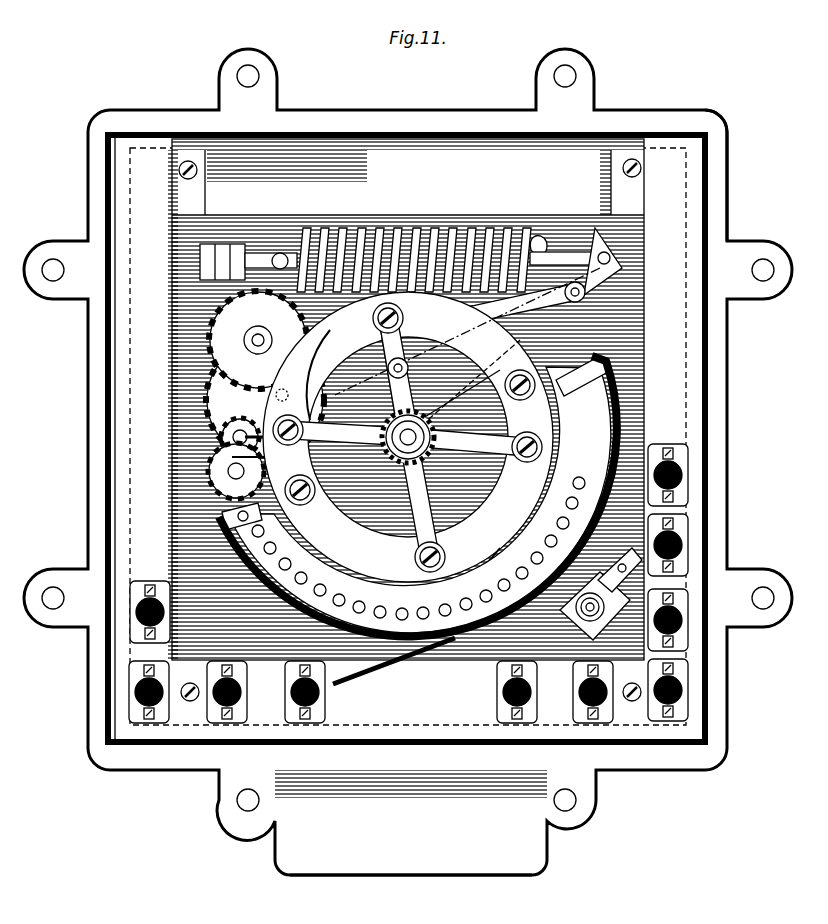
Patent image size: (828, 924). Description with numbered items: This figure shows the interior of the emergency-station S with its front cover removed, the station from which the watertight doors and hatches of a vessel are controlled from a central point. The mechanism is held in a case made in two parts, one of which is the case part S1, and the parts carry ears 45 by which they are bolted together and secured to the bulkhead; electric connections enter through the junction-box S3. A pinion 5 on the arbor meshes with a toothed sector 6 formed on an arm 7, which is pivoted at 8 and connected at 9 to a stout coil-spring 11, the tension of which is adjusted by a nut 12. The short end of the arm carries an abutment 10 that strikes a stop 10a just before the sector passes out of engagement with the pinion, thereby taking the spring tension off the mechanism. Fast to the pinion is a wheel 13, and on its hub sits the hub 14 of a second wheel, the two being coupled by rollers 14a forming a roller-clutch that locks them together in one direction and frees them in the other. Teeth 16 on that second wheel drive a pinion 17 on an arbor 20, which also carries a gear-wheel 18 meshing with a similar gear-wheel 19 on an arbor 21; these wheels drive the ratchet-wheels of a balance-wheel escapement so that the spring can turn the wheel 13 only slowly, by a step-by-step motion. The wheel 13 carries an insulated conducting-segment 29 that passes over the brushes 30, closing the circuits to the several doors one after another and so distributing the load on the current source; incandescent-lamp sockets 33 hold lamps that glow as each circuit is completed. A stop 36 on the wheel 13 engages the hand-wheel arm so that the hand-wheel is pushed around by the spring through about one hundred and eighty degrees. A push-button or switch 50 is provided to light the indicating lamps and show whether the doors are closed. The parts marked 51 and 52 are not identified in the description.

The emergency-station S is at (408, 462).
The case part S1 is at (722, 194).
The junction-box S3 is at (411, 822).
The ears 45 is at (262, 66).
The pinion 5 is at (408, 437).
The toothed sector 6 is at (460, 393).
The arm 7 is at (464, 388).
The pivot 8 is at (490, 310).
The spring connection 9 is at (612, 256).
The abutment 10 is at (588, 222).
The stop 10a is at (541, 232).
The coil-spring 11 is at (389, 228).
The nut 12 is at (243, 228).
The wheel 13 is at (401, 436).
The hub 14 is at (431, 425).
The rollers 14a is at (418, 552).
The teeth 16 is at (236, 471).
The pinion 17 is at (248, 423).
The gear-wheel 18 is at (240, 425).
The gear-wheel 19 is at (258, 340).
The arbor 20 is at (246, 450).
The arbor 21 is at (260, 400).
The insulated conducting-segment 29 is at (403, 309).
The brushes 30 is at (225, 518).
The incandescent-lamp sockets 33 is at (672, 530).
The stop 36 is at (416, 378).
The push-button or switch 50 is at (590, 620).
The contact arc 51 is at (628, 366).
The pointer 52 is at (394, 668).